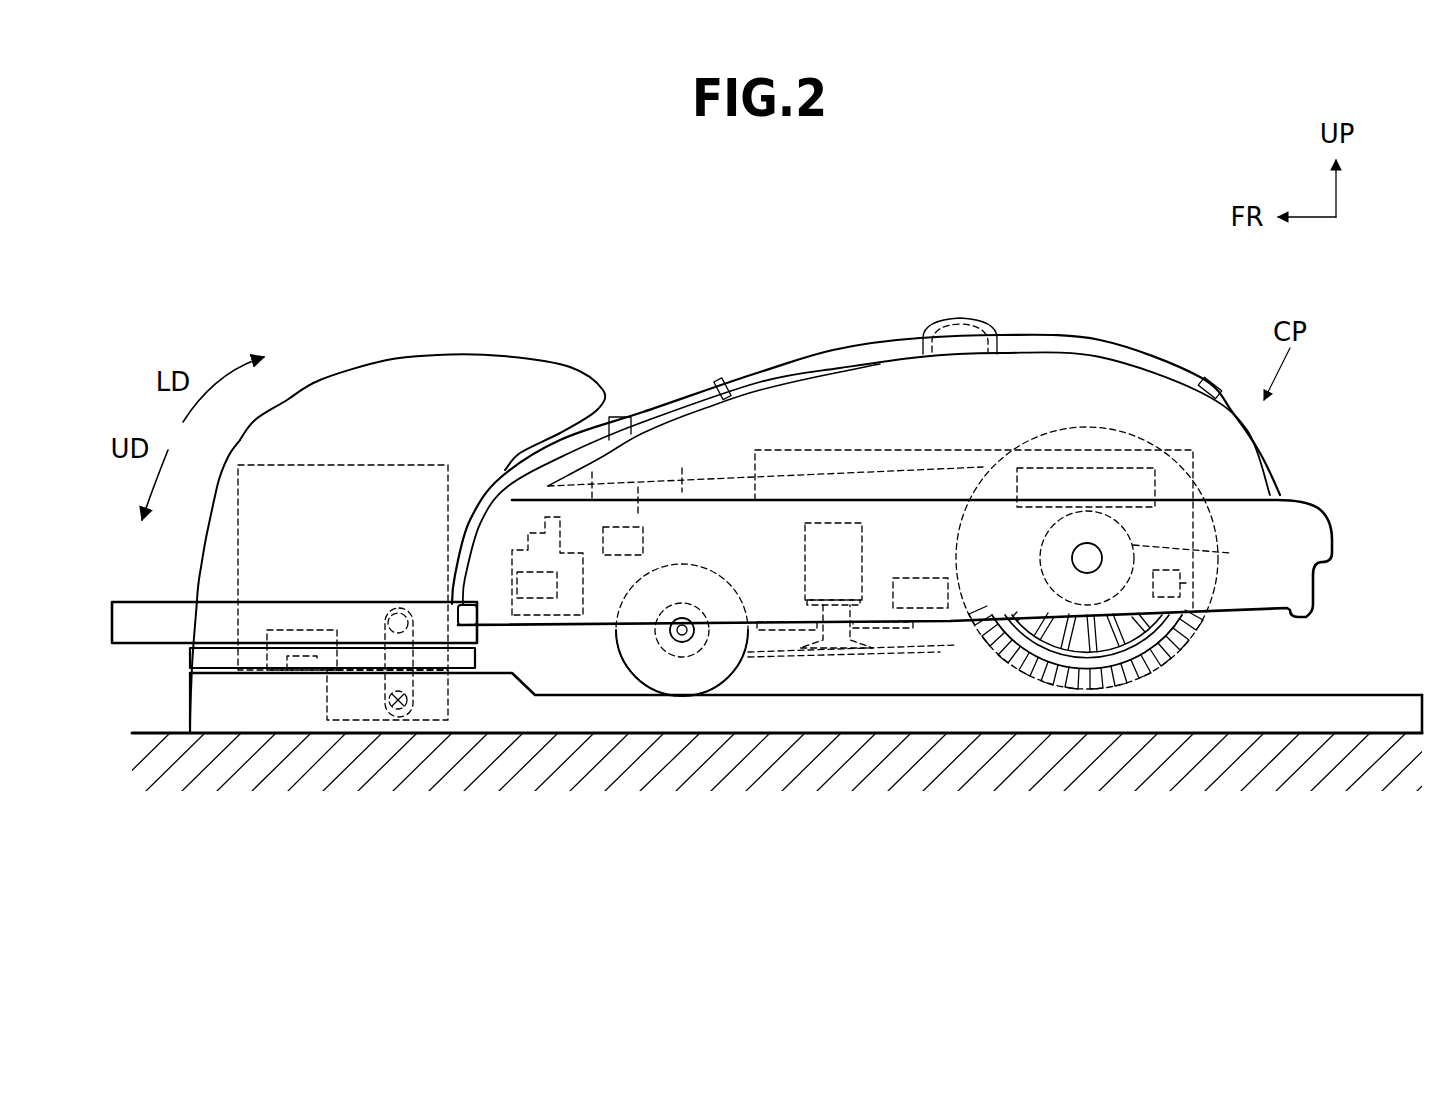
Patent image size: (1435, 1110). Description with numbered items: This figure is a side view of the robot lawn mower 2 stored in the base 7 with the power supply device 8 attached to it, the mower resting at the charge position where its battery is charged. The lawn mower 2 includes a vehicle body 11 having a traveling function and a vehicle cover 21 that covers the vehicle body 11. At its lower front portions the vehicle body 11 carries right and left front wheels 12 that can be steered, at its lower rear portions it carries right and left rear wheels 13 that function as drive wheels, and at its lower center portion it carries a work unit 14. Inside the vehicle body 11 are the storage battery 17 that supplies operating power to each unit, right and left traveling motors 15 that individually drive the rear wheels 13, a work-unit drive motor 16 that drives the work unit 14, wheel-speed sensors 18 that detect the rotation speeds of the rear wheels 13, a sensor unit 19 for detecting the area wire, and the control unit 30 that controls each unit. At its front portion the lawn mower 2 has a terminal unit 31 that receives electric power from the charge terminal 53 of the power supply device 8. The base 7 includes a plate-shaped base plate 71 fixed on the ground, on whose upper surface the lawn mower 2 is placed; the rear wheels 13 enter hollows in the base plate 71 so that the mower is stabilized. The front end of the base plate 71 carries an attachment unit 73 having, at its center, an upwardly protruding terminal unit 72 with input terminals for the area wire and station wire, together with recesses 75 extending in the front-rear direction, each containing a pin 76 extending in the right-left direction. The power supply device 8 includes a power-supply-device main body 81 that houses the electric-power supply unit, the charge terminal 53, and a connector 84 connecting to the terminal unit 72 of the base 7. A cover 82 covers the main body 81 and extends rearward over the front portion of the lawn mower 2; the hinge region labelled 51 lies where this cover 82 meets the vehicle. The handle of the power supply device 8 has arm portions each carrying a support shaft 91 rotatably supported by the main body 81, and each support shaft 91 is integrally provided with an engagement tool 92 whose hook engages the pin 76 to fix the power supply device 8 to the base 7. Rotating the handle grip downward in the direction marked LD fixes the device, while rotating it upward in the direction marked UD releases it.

The lawn mower 2 is at (538, 330).
The base 7 is at (1380, 660).
The power supply device 8 is at (300, 350).
The vehicle body 11 is at (820, 446).
The front wheels 12 is at (707, 672).
The rear wheels 13 is at (1130, 662).
The work unit 14 is at (910, 668).
The traveling motors 15 is at (1225, 562).
The work-unit drive motor 16 is at (805, 556).
The storage battery 17 is at (907, 577).
The wheel-speed sensors 18 is at (1215, 612).
The sensor unit 19 is at (645, 540).
The vehicle cover 21 is at (525, 482).
The control unit 30 is at (1160, 482).
The terminal unit 31 is at (553, 626).
The cover tip 51 is at (580, 367).
The charge terminal 53 is at (458, 574).
The base plate 71 is at (1030, 702).
The terminal unit 72 is at (288, 662).
The attachment unit 73 is at (207, 675).
The recesses 75 is at (345, 722).
The pin 76 is at (406, 703).
The power-supply-device main body 81 is at (325, 465).
The cover 82 is at (425, 357).
The connector 84 is at (288, 630).
The support shaft 91 is at (392, 606).
The engagement tool 92 is at (389, 712).